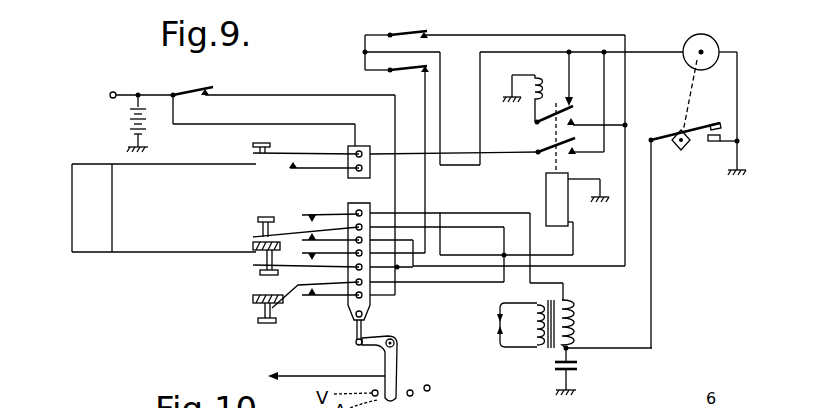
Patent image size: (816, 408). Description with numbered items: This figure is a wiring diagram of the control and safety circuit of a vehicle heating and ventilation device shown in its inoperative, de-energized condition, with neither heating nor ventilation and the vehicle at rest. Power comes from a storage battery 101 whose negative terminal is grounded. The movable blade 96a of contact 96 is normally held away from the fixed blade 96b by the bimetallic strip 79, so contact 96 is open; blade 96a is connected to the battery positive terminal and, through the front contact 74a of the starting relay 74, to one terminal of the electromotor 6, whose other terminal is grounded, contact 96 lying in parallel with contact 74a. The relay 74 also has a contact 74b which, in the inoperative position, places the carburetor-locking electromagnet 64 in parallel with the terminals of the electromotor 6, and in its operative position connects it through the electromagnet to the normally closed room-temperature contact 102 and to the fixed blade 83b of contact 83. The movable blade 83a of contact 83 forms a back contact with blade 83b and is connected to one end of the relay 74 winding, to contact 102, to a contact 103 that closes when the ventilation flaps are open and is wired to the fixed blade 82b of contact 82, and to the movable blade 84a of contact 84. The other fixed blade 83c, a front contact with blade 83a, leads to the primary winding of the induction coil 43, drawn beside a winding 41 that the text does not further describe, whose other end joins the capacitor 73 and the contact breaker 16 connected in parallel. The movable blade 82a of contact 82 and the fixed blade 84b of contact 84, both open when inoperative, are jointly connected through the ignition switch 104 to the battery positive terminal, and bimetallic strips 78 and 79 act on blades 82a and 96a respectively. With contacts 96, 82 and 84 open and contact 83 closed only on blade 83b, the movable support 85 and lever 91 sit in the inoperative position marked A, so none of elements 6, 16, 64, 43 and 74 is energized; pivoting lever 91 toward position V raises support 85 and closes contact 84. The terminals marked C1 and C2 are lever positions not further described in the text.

The electromotor 6 is at (713, 60).
The contact breaker 16 is at (703, 138).
The transformer primary winding 41 is at (503, 328).
The induction coil 43 is at (577, 296).
The electromagnet 64 is at (545, 82).
The capacitor 73 is at (571, 376).
The starting relay 74 is at (560, 192).
The front contact of relay 74a is at (536, 145).
The contact of relay 74b is at (574, 109).
The bimetallic strip 78 is at (129, 253).
The bimetallic strip 79 is at (146, 166).
The contact 82 is at (262, 292).
The movable blade of contact 82 82a is at (252, 270).
The fixed blade of contact 82 82b is at (399, 270).
The contact 83 is at (304, 226).
The movable blade of contact 83 83a is at (255, 226).
The fixed blade of contact 83 83b is at (332, 240).
The fixed blade of contact 83 83c is at (327, 200).
The contact 84 is at (321, 298).
The movable blade of contact 84 84a is at (258, 322).
The fixed blade of contact 84 84b is at (311, 298).
The movable support 85 is at (372, 300).
The lever 91 is at (398, 346).
The contact 96 is at (302, 158).
The movable blade of contact 96 96a is at (312, 150).
The fixed blade of contact 96 96b is at (336, 166).
The storage battery 101 is at (132, 113).
The room-temperature contact 102 is at (426, 30).
The contact 103 is at (407, 70).
The ignition switch 104 is at (283, 179).
The terminal C1 is at (413, 387).
The terminal C2 is at (431, 389).